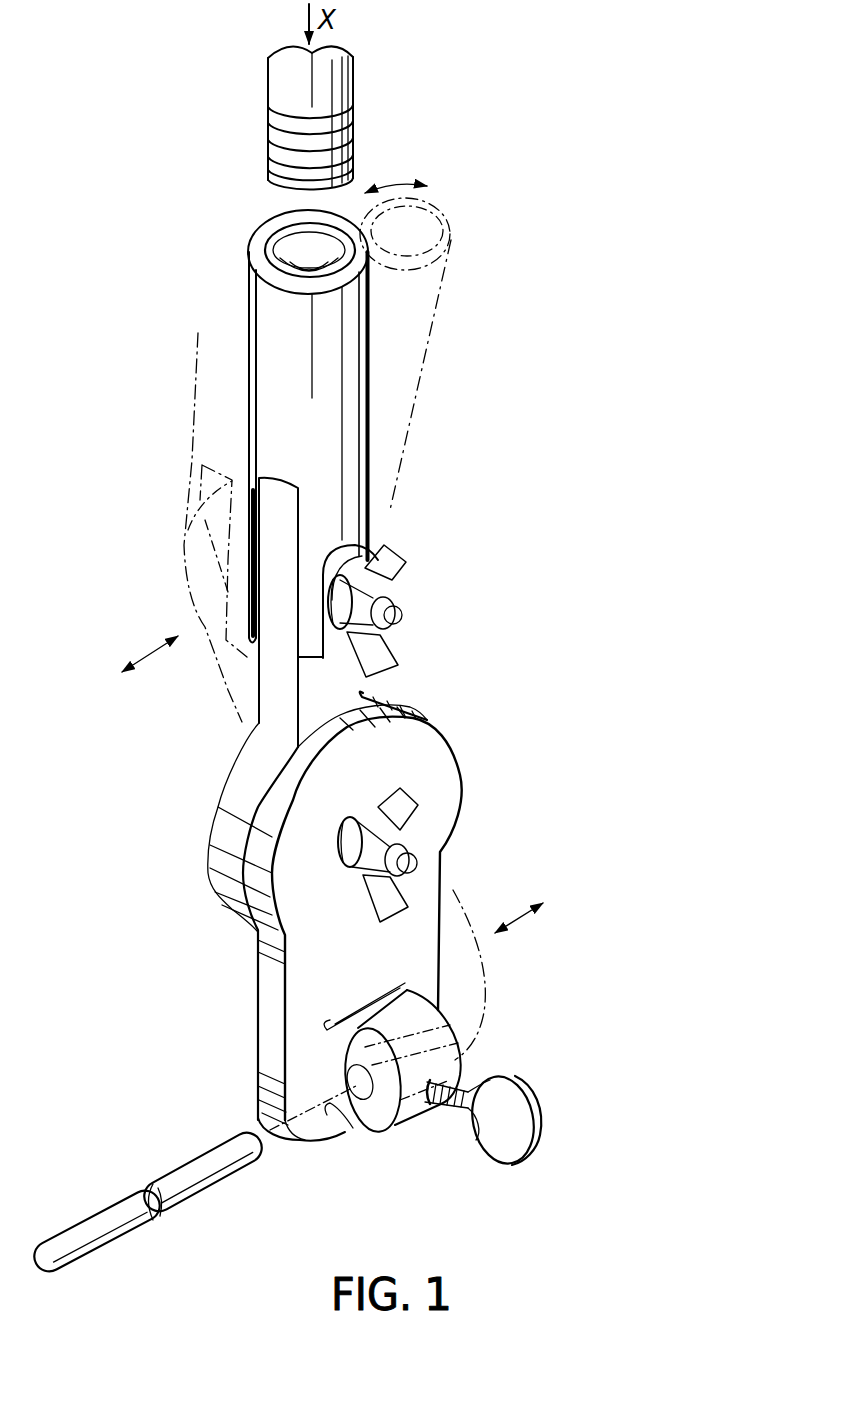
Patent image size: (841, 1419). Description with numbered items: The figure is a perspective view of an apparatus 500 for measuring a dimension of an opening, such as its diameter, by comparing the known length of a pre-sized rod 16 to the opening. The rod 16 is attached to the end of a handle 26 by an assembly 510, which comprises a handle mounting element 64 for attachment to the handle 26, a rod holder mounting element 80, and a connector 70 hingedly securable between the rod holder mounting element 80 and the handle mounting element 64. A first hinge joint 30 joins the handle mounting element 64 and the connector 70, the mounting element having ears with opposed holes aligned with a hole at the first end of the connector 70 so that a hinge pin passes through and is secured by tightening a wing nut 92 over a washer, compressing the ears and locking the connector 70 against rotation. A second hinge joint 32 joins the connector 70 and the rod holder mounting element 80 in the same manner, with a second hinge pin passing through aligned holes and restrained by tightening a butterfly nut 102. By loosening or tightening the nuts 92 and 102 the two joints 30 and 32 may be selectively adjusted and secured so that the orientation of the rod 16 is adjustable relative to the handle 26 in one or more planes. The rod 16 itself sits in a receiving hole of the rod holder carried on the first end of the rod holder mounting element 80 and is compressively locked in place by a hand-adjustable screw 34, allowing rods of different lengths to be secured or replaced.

The pre-sized rod 16 is at (225, 1188).
The handle 26 is at (345, 90).
The first hinge joint 30 is at (412, 540).
The second hinge joint 32 is at (430, 700).
The screw 34 is at (545, 1125).
The handle mounting element 64 is at (429, 354).
The connector 70 is at (224, 786).
The rod holder mounting element 80 is at (453, 748).
The wing nut 92 is at (403, 566).
The butterfly nut 102 is at (418, 822).
The apparatus 500 is at (427, 162).
The assembly 510 is at (196, 246).